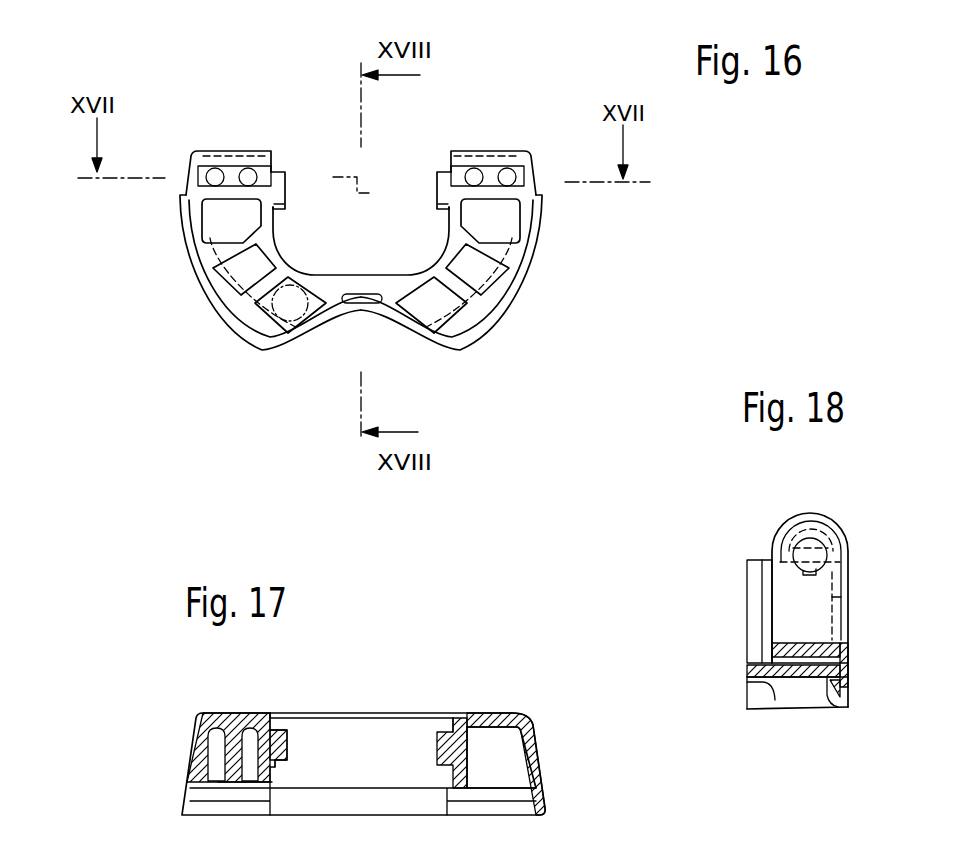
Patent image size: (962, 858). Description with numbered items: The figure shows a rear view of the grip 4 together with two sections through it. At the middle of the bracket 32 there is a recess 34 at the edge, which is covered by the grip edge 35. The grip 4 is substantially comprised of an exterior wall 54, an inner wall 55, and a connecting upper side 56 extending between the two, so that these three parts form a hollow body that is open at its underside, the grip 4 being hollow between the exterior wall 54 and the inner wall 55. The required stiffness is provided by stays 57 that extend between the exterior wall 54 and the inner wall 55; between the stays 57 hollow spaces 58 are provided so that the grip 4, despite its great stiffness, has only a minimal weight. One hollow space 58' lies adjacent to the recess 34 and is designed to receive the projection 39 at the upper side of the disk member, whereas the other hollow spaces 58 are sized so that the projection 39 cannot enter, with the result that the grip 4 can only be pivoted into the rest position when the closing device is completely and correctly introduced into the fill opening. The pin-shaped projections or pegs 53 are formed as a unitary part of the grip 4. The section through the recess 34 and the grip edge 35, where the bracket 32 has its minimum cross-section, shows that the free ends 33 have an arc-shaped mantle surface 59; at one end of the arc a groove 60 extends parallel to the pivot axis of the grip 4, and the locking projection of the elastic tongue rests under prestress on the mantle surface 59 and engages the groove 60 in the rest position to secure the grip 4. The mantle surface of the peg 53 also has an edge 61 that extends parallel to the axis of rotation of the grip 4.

In FIG. 16, the grip 4 is at (160, 314).
In FIG. 18, the grip 4 is at (728, 632).
In FIG. 16, the bracket 32 is at (537, 289).
In FIG. 16, the free ends 33 is at (238, 160).
In FIG. 18, the free ends 33 is at (832, 520).
In FIG. 16, the recess 34 is at (322, 342).
In FIG. 18, the recess 34 is at (748, 684).
In FIG. 16, the grip edge 35 is at (350, 332).
In FIG. 18, the grip edge 35 is at (820, 710).
In FIG. 16, the projection 39 is at (275, 313).
In FIG. 16, the pin-shaped projections (pegs) 53 is at (281, 172).
In FIG. 17, the pin-shaped projections (pegs) 53 is at (279, 732).
In FIG. 18, the pin-shaped projections (pegs) 53 is at (830, 553).
In FIG. 16, the exterior wall 54 is at (503, 312).
In FIG. 17, the exterior wall 54 is at (195, 757).
In FIG. 16, the inner wall 55 is at (442, 248).
In FIG. 17, the inner wall 55 is at (460, 727).
In FIG. 17, the upper side 56 is at (221, 713).
In FIG. 16, the stays 57 is at (220, 250).
In FIG. 16, the hollow spaces 58 is at (368, 306).
In FIG. 17, the hollow spaces 58 is at (547, 761).
In FIG. 16, the hollow space 58' is at (288, 345).
In FIG. 18, the arc-shaped mantle surface 59 is at (802, 510).
In FIG. 18, the groove 60 is at (775, 541).
In FIG. 18, the edge 61 is at (816, 572).